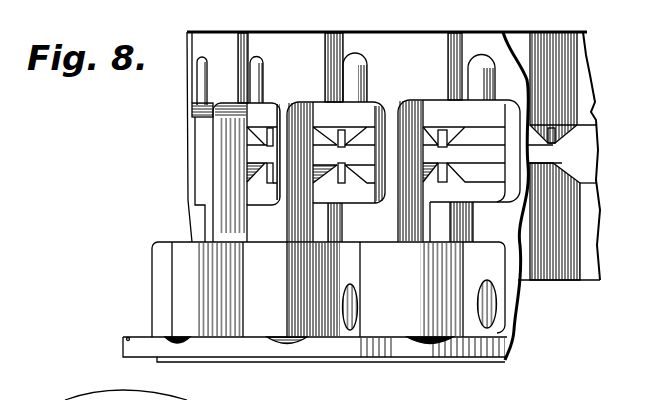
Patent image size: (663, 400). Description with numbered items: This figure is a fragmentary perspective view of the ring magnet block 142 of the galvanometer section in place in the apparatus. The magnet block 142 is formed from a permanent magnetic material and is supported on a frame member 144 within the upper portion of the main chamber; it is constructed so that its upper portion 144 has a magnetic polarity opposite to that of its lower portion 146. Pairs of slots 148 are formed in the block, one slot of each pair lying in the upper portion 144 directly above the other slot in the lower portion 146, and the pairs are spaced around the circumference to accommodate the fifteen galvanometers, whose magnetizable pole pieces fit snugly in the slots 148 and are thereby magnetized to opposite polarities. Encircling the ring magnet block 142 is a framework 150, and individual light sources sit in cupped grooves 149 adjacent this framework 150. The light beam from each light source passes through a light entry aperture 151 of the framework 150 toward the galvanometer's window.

The ring magnet block 142 is at (347, 70).
The upper portion 144 is at (446, 116).
The lower portion 146 is at (433, 187).
The slots 148 is at (270, 128).
The cupped grooves 149 is at (266, 343).
The framework 150 is at (317, 318).
The light entry aperture 151 is at (350, 330).